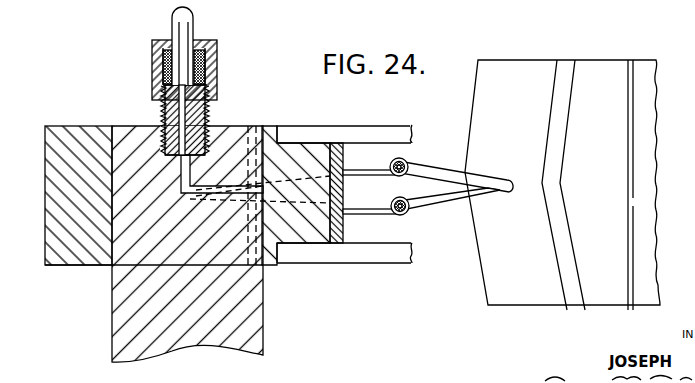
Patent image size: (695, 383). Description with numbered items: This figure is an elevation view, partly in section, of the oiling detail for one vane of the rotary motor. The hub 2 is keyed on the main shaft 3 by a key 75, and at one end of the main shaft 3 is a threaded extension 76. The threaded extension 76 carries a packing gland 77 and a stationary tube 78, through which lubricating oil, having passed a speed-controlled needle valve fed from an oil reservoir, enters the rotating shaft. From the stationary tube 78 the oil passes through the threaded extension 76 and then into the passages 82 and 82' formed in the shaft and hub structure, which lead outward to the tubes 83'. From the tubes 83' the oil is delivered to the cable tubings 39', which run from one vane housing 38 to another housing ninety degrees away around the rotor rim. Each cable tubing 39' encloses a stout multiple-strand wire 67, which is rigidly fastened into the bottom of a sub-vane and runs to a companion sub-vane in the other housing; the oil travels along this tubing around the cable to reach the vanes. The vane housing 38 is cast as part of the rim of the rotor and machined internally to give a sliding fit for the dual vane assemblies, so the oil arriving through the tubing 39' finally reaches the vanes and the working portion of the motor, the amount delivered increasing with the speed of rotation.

The hub 2 is at (268, 262).
The main shaft 3 is at (187, 244).
The vane housing 38 is at (562, 185).
The cable tubing 39' is at (455, 189).
The multiple-strand wire 67 is at (404, 160).
The key 75 is at (255, 128).
The threaded extension 76 is at (206, 115).
The packing gland 77 is at (217, 72).
The stationary tube 78 is at (193, 25).
The passage 82 is at (302, 195).
The passage 82' is at (296, 219).
The tube 83' is at (371, 203).